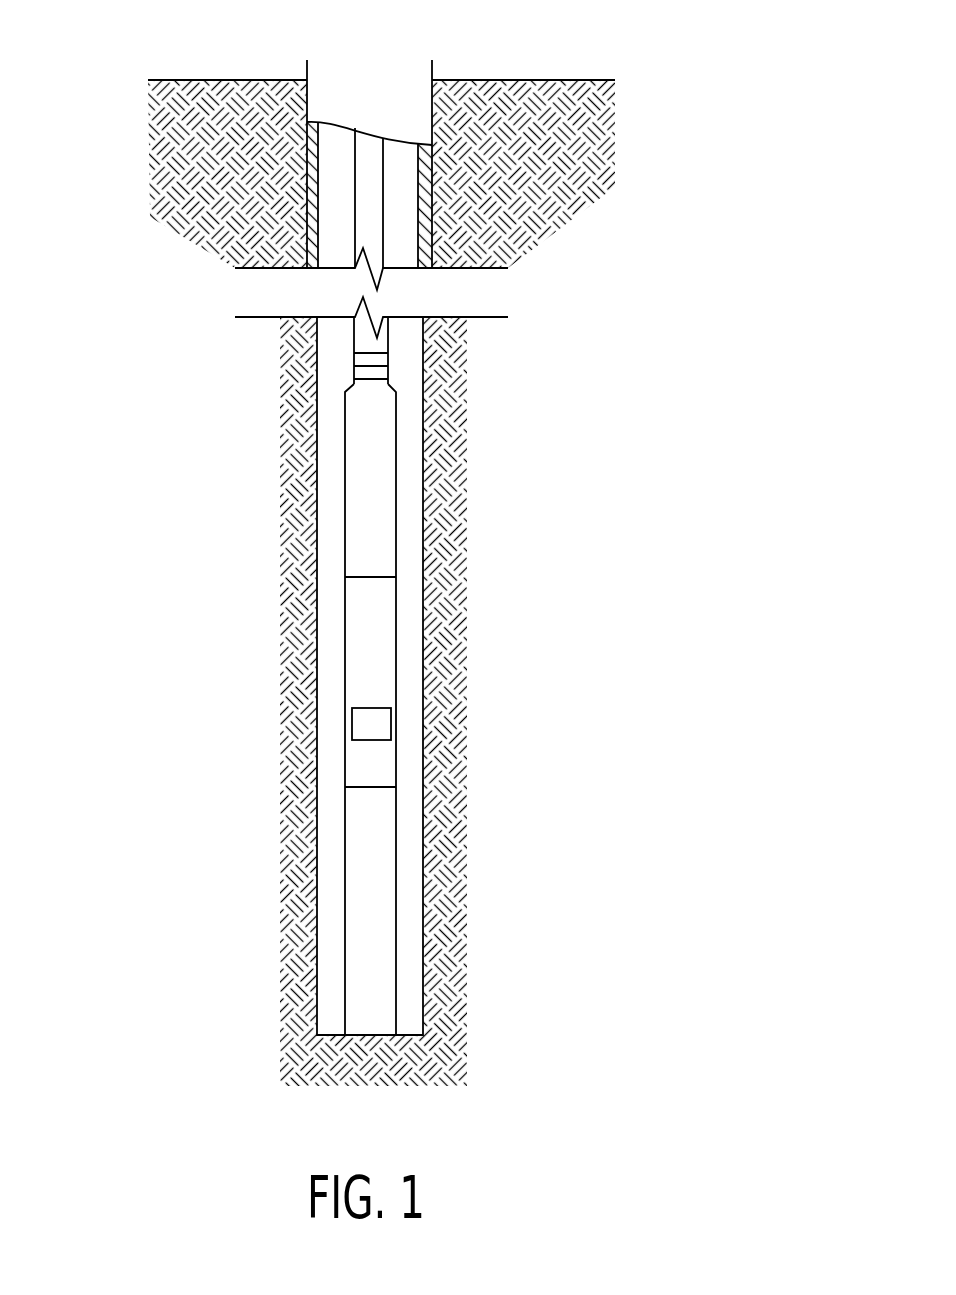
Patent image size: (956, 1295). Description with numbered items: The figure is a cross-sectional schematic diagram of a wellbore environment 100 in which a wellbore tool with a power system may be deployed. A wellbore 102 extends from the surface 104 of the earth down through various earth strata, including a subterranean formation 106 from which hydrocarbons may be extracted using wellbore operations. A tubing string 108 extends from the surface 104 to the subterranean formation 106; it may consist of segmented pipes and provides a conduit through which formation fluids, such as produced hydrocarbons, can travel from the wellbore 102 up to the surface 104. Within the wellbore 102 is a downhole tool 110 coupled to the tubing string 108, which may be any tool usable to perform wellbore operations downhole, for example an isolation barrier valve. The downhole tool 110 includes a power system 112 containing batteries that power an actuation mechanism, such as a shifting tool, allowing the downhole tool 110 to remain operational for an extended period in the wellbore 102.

The wellbore environment 100 is at (150, 289).
The wellbore 102 is at (383, 86).
The surface 104 is at (563, 79).
The subterranean formation 106 is at (445, 438).
The tubing string 108 is at (384, 235).
The downhole tool 110 is at (396, 655).
The power system 112 is at (391, 723).